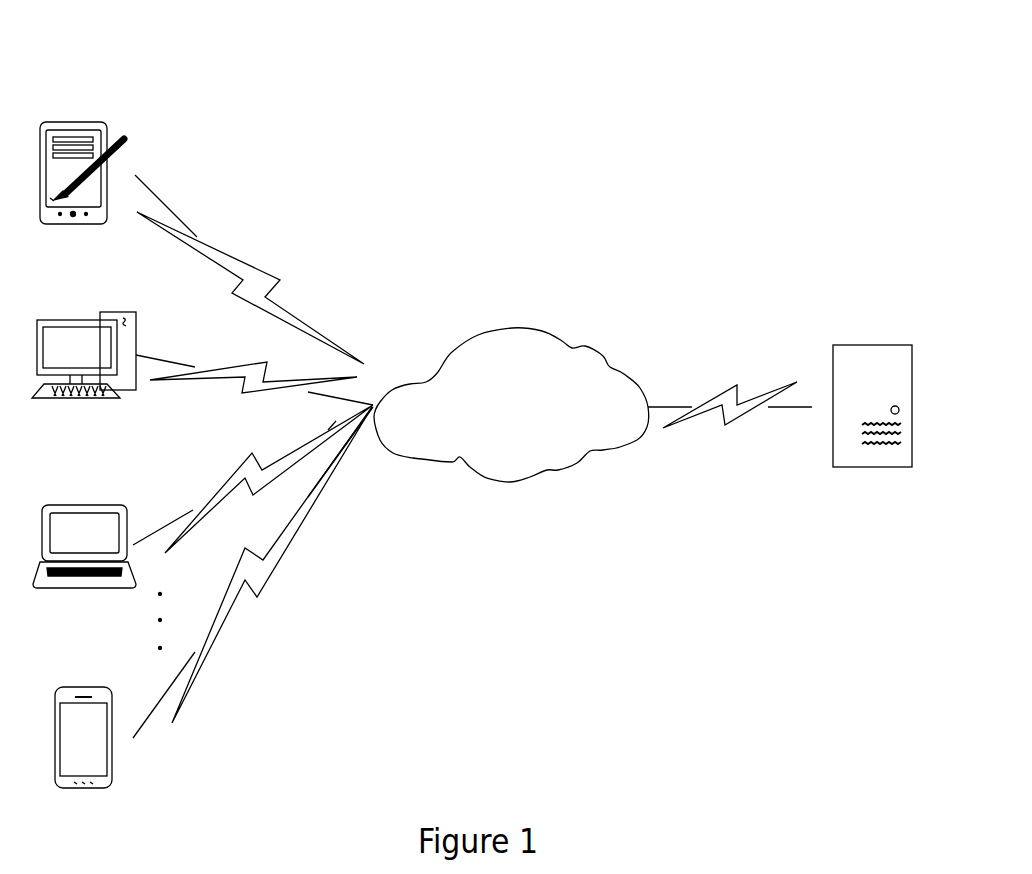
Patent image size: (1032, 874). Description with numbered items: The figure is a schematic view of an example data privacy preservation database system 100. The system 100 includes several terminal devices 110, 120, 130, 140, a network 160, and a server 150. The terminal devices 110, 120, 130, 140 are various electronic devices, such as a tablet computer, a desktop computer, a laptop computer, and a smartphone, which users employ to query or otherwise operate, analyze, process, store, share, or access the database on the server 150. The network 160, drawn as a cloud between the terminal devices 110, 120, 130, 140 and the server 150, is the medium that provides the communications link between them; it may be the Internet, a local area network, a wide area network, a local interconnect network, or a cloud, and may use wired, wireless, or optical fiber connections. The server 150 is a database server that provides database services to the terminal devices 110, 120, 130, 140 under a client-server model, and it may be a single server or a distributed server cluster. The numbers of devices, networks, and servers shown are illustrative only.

The system 100 is at (546, 92).
The terminal device 110 is at (103, 122).
The terminal device 120 is at (70, 319).
The terminal device 130 is at (75, 505).
The terminal device 140 is at (80, 688).
The server 150 is at (880, 345).
The network 160 is at (533, 327).